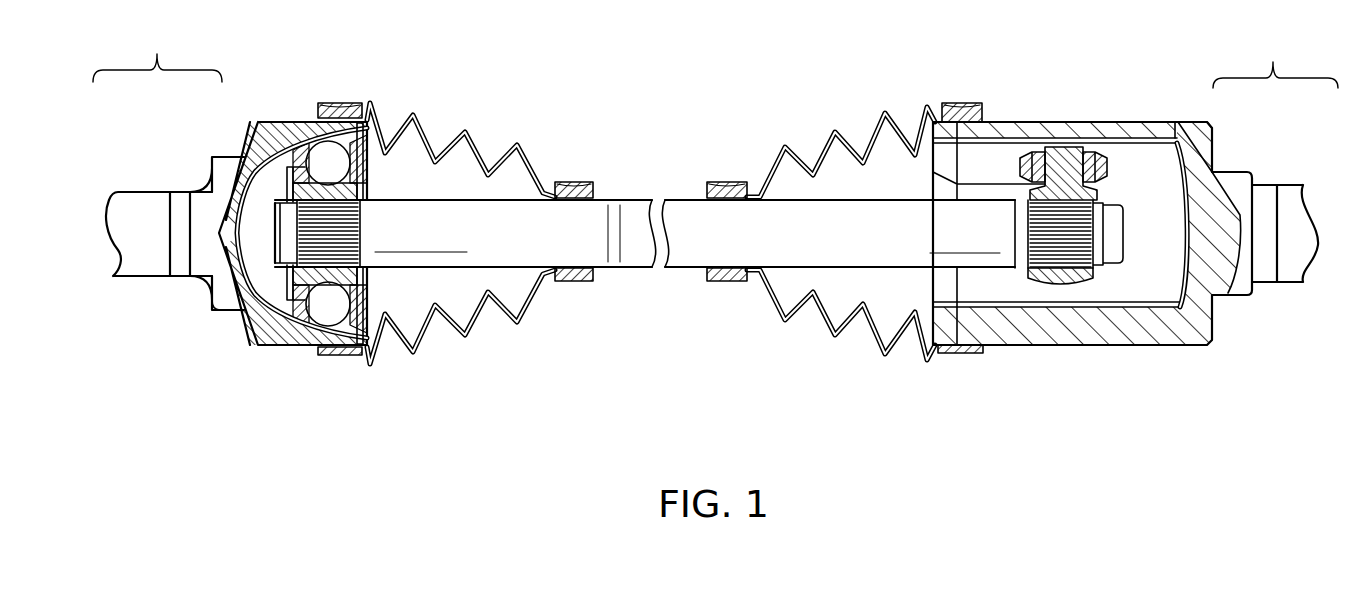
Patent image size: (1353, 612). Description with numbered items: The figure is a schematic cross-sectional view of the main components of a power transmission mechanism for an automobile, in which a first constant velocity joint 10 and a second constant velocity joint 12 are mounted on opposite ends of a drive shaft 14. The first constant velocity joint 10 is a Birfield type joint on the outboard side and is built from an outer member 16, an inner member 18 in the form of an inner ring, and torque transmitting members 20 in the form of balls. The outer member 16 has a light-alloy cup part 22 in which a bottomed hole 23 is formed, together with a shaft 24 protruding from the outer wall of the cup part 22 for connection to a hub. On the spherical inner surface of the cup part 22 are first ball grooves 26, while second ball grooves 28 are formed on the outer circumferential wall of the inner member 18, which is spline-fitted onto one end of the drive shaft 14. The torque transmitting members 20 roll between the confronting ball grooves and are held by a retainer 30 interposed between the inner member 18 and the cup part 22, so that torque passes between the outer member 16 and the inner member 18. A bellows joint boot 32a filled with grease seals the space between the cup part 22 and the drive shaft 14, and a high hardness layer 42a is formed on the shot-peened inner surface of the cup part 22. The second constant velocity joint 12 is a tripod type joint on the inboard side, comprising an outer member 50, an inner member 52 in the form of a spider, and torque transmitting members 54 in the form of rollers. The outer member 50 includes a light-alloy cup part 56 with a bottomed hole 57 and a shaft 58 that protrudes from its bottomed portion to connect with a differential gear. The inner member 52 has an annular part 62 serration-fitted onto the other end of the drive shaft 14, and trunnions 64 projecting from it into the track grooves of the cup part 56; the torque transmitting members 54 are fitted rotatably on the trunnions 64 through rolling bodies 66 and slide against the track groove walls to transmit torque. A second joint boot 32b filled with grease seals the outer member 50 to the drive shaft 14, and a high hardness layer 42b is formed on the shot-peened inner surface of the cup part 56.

The first constant velocity joint 10 is at (347, 56).
The second constant velocity joint 12 is at (1062, 58).
The drive shaft 14 is at (640, 207).
The outer member 16 is at (157, 56).
The inner member 18 is at (355, 192).
The torque transmitting members 20 is at (323, 152).
The cup part 22 is at (272, 122).
The bottomed hole 23 is at (230, 313).
The shaft 24 is at (140, 192).
The first ball grooves 26 is at (383, 320).
The second ball grooves 28 is at (303, 308).
The retainer 30 is at (370, 282).
The joint boot 32a is at (537, 173).
The joint boot 32b is at (885, 115).
The high hardness layer 42a is at (256, 250).
The high hardness layer 42b is at (1183, 290).
The outer member 50 is at (1275, 62).
The inner member 52 is at (1080, 195).
The torque transmitting members 54 is at (1102, 165).
The cup part 56 is at (1200, 122).
The bottomed hole 57 is at (1148, 212).
The shaft 58 is at (1287, 193).
The annular part 62 is at (1050, 280).
The trunnions 64 is at (1060, 150).
The rolling bodies 66 is at (1087, 157).